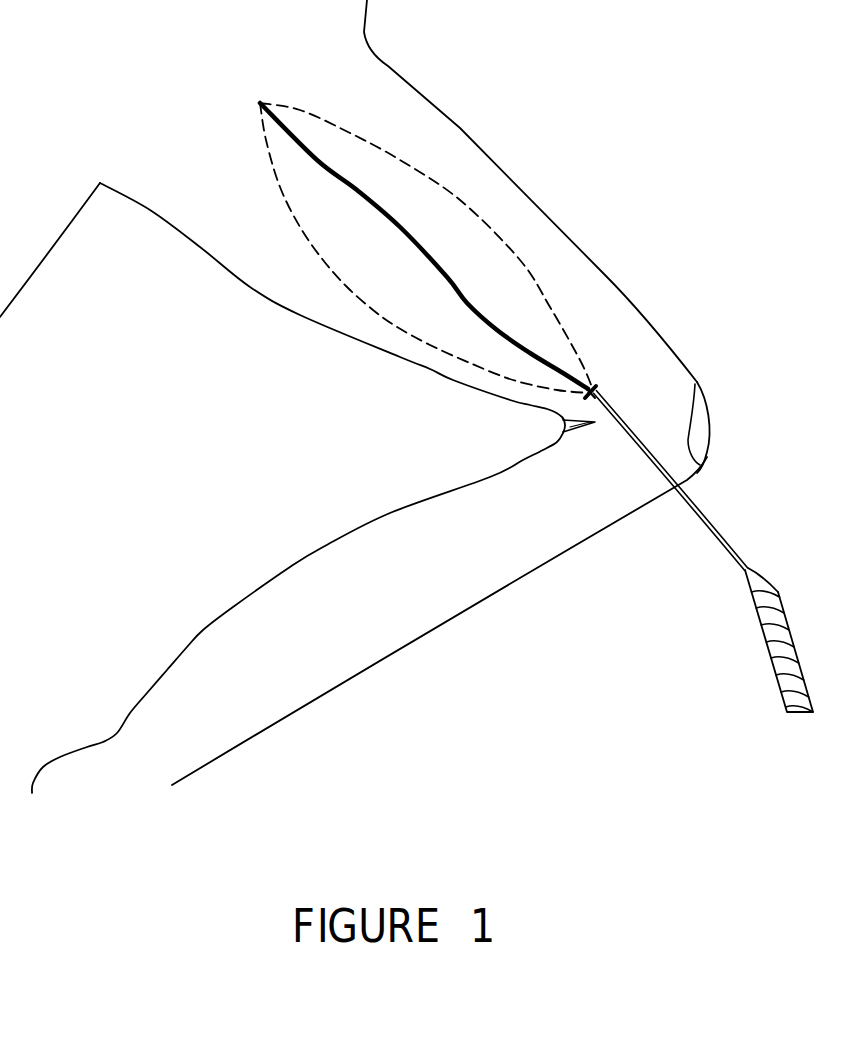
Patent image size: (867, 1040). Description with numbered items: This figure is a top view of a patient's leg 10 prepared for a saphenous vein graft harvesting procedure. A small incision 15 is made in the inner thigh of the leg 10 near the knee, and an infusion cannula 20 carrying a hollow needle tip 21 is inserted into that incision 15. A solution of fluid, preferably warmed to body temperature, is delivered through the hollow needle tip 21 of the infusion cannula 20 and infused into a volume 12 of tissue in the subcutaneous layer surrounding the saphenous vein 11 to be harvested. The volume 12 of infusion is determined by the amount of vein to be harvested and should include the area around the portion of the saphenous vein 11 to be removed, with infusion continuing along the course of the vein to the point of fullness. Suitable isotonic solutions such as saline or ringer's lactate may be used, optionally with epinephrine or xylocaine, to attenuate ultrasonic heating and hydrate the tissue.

The patient's leg 10 is at (656, 150).
The saphenous vein 11 is at (327, 165).
The volume of tissue 12 is at (413, 300).
The incision 15 is at (586, 393).
The infusion cannula 20 is at (767, 648).
The hollow needle tip 21 is at (600, 393).